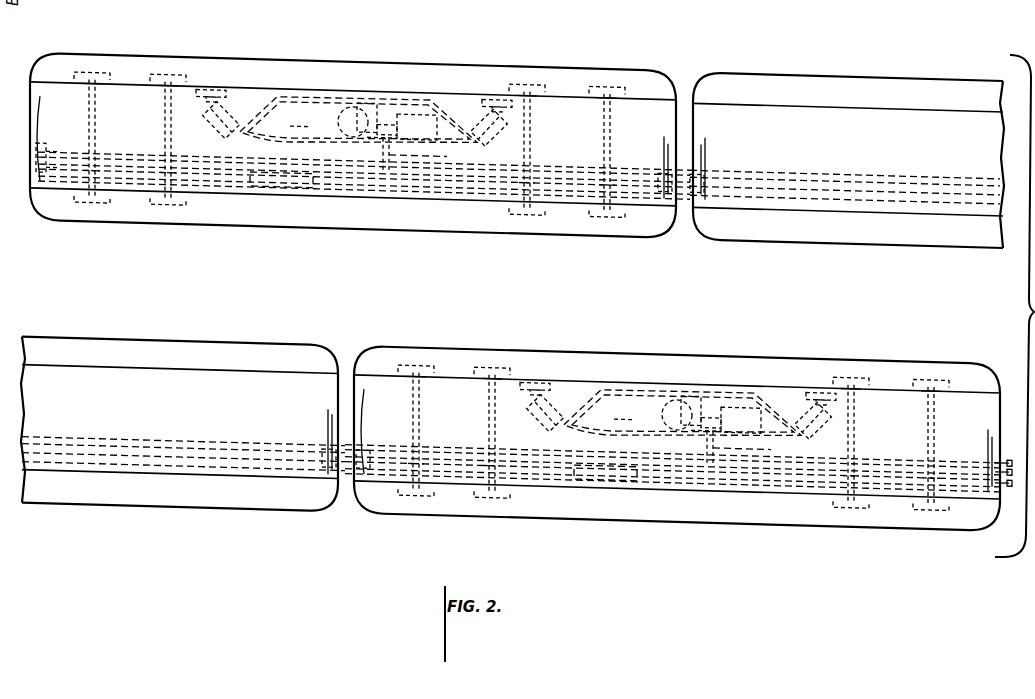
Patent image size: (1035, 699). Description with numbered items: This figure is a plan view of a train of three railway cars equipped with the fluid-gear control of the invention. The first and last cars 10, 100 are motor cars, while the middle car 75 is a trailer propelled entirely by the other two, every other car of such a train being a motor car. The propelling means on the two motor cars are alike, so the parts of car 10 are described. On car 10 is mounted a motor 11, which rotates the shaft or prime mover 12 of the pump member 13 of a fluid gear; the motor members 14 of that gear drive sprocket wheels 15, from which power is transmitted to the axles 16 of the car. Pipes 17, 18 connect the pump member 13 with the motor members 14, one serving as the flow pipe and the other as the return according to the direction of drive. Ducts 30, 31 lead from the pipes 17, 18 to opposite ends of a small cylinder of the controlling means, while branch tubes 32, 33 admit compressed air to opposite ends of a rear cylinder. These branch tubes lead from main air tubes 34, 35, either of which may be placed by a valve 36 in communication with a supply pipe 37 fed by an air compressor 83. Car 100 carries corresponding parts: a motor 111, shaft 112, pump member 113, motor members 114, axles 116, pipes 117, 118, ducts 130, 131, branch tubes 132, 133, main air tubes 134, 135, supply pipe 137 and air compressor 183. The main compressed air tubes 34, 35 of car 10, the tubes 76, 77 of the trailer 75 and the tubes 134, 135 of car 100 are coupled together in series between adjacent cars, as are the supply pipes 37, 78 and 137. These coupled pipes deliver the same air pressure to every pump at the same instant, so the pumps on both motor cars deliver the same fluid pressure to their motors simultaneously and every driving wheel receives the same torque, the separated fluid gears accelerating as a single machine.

The railway car 10 is at (380, 230).
The motor 11 is at (425, 118).
The shaft or prime mover 12 is at (391, 118).
The pump member 13 is at (344, 118).
The motor members 14 is at (220, 133).
The sprocket wheels 15 is at (212, 90).
The axles 16 is at (165, 117).
The pipe 17 is at (313, 97).
The pipe 18 is at (305, 142).
The duct 30 is at (372, 115).
The duct 31 is at (377, 138).
The branch tube 32 is at (380, 157).
The branch tube 33 is at (428, 157).
The main air tube 34 is at (237, 152).
The main air tube 35 is at (240, 165).
The valve 36 is at (44, 146).
The supply pipe 37 is at (420, 187).
The air compressor 83 is at (277, 183).
The railway car 75 is at (905, 237).
The main compressed air tube 76 is at (827, 177).
The main compressed air tube 77 is at (853, 187).
The supply pipe 78 is at (938, 203).
The railway car 100 is at (711, 517).
The motor 111 is at (737, 408).
The shaft or prime mover 112 is at (710, 410).
The pump member 113 is at (660, 413).
The motor members 114 is at (540, 427).
The axles 116 is at (495, 424).
The pipe 117 is at (627, 387).
The pipe 118 is at (603, 428).
The duct 130 is at (683, 393).
The duct 131 is at (698, 432).
The branch tube 132 is at (707, 436).
The branch tube 133 is at (756, 443).
The main air tube 134 is at (458, 447).
The main air tube 135 is at (516, 463).
The supply pipe 137 is at (773, 483).
The air compressor 183 is at (597, 482).